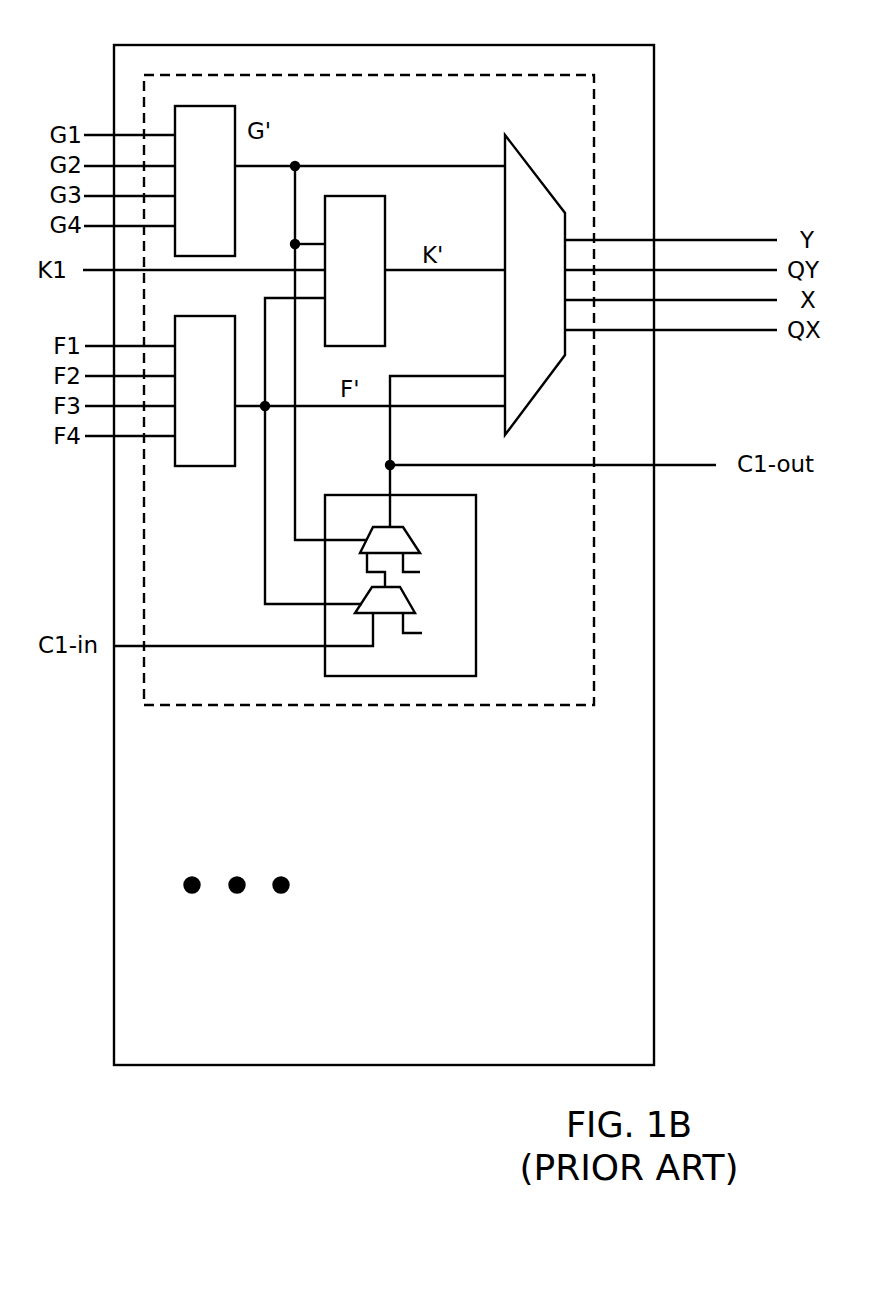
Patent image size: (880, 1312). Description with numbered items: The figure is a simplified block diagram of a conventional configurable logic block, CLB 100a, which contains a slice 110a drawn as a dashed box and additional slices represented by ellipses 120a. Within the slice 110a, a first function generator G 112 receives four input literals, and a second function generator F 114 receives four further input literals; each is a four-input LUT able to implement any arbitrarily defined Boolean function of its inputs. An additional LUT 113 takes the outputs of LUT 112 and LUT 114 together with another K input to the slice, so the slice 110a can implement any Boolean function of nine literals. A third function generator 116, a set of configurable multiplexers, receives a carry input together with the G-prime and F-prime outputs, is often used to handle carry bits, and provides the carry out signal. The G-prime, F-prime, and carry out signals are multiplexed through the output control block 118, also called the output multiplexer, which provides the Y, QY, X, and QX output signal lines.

The CLB 100a is at (384, 535).
The slice 110a is at (369, 356).
The first function generator G 112 is at (184, 192).
The LUT 113 is at (334, 282).
The second function generator F 114 is at (184, 404).
The third function generator 116 is at (456, 585).
The output control block 118 is at (513, 297).
The ellipses 120a is at (274, 856).